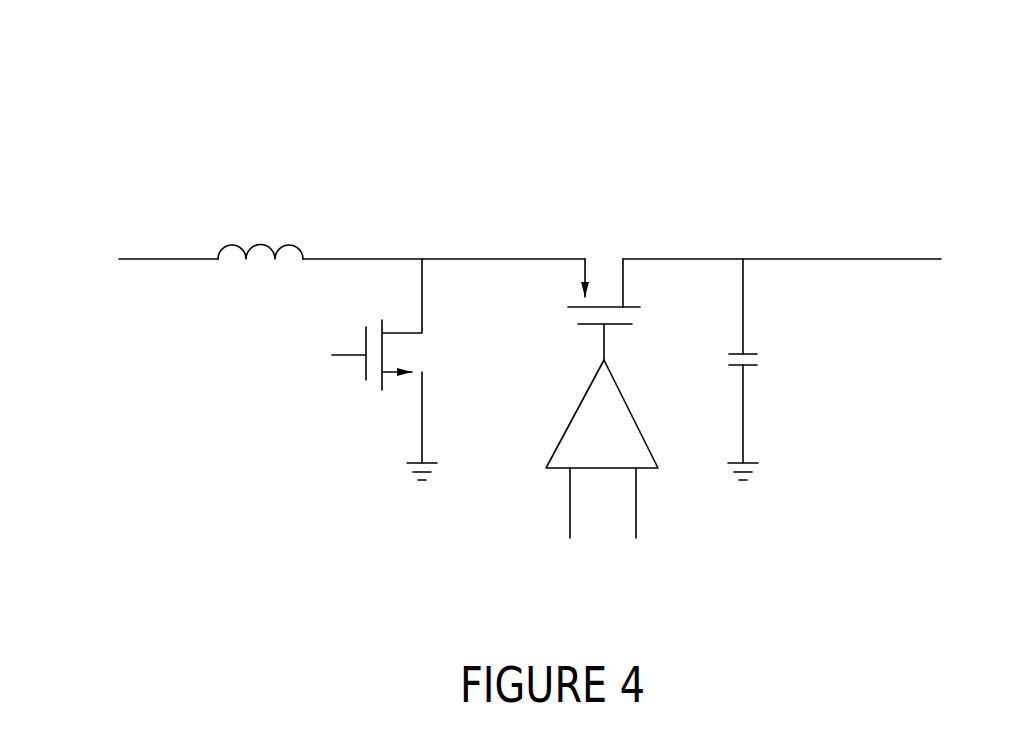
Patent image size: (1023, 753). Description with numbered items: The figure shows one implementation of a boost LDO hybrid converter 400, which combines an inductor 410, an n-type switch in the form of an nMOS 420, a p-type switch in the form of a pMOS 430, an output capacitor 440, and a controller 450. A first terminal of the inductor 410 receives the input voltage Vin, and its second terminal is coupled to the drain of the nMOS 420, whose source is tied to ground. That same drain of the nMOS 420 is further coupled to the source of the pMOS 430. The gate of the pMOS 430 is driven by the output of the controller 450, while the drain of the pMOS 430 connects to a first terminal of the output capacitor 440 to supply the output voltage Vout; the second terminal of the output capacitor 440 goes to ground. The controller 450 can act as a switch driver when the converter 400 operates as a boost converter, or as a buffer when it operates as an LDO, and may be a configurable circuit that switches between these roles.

The boost LDO hybrid converter 400 is at (917, 119).
The inductor 410 is at (288, 243).
The n-type metal oxide semiconductor device (nMOS) 420 is at (362, 393).
The p-type metal oxide semiconductor device (pMOS) 430 is at (566, 226).
The output capacitor C_bst 440 is at (758, 379).
The controller 450 is at (633, 414).